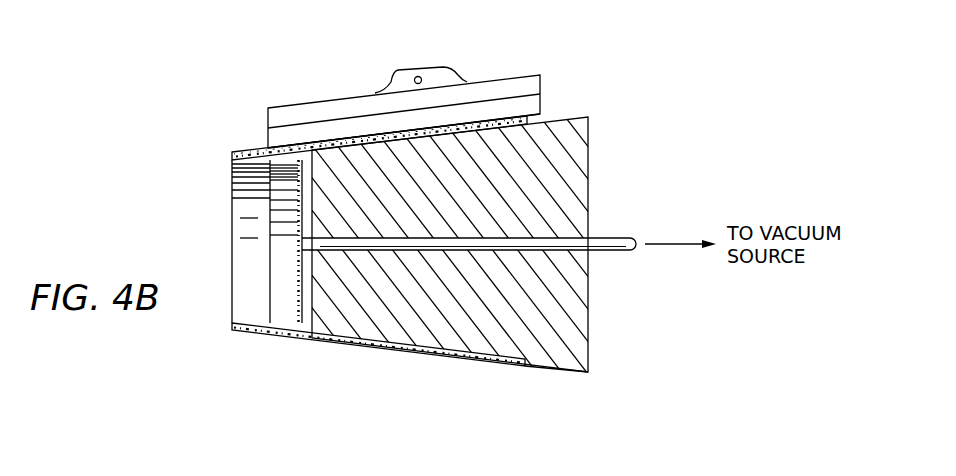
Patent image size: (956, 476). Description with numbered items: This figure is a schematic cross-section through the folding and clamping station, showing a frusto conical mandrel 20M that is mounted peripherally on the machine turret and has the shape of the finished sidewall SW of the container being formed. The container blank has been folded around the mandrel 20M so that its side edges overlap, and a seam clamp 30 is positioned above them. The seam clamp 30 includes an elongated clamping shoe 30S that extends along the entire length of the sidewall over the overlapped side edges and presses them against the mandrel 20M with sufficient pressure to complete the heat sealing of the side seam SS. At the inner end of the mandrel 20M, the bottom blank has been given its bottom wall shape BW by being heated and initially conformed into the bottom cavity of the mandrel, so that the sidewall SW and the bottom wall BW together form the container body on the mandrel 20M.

The seam clamp 30 is at (484, 72).
The elongated clamping shoe 30S is at (533, 104).
The side seam SS is at (362, 150).
The sidewall SW is at (380, 352).
The bottom wall shape BW is at (298, 180).
The frusto conical mandrel 20M is at (582, 282).